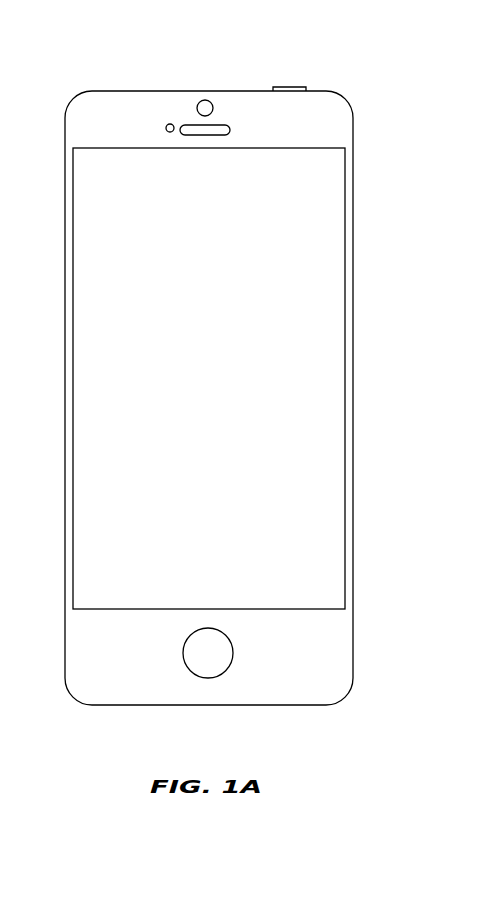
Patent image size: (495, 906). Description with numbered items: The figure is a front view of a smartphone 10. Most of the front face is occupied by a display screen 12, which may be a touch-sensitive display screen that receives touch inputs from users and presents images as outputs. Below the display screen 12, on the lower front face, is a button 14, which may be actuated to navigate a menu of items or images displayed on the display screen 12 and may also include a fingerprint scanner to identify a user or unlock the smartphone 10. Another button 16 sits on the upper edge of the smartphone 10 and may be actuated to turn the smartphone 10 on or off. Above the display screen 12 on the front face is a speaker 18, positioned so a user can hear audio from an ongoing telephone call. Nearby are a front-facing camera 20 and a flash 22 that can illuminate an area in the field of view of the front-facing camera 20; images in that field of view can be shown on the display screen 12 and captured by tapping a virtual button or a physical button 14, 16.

The smartphone 10 is at (383, 99).
The display screen 12 is at (191, 373).
The button 14 is at (199, 661).
The button 16 is at (290, 87).
The speaker 18 is at (207, 136).
The front-facing camera 20 is at (206, 99).
The flash 22 is at (168, 133).